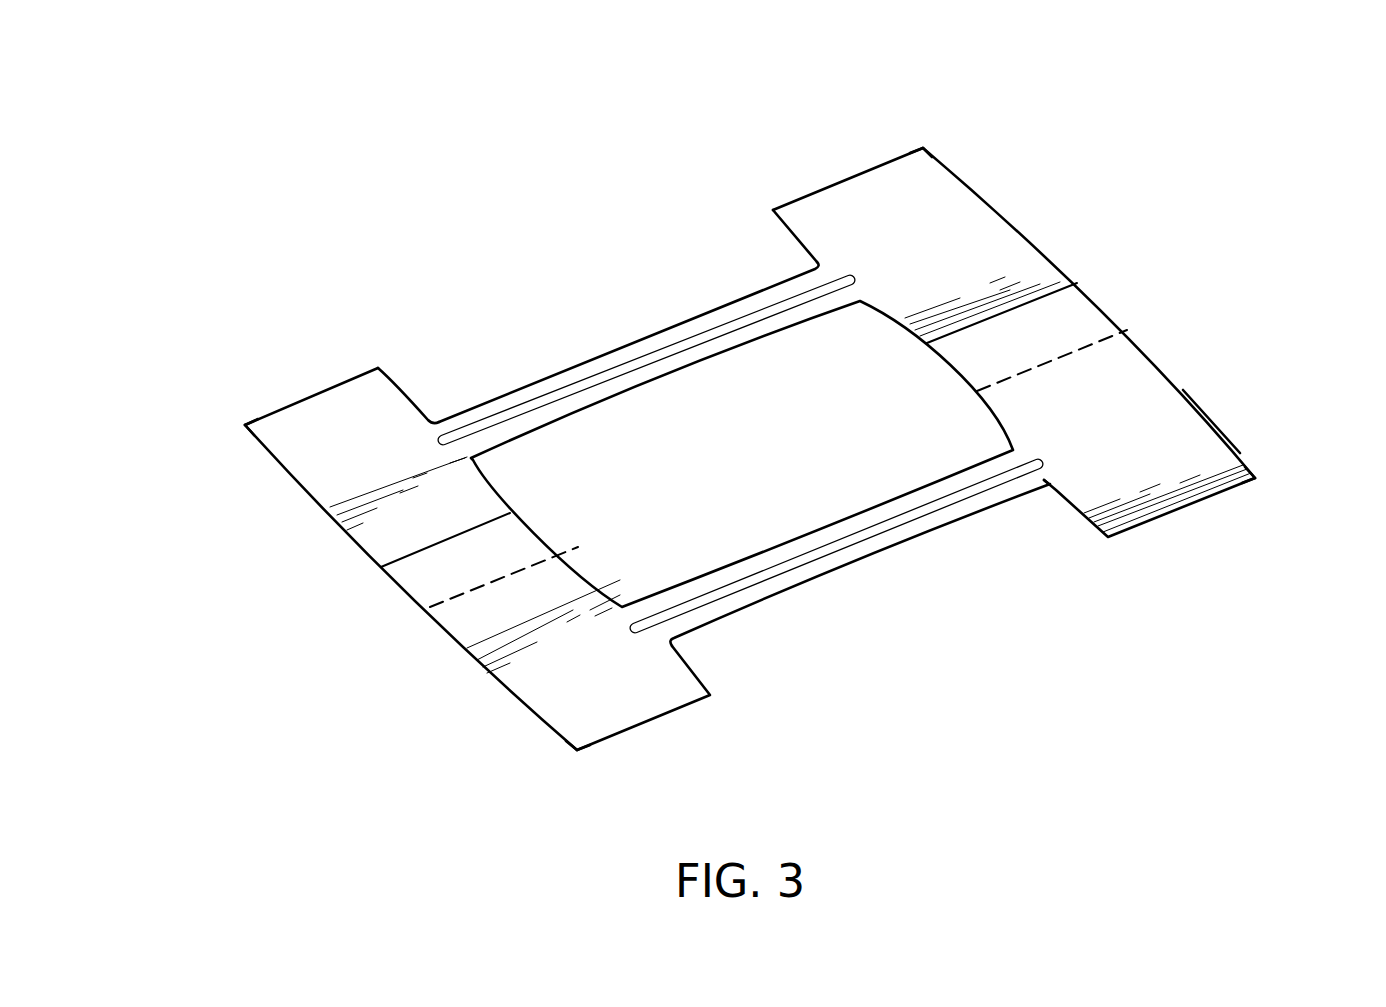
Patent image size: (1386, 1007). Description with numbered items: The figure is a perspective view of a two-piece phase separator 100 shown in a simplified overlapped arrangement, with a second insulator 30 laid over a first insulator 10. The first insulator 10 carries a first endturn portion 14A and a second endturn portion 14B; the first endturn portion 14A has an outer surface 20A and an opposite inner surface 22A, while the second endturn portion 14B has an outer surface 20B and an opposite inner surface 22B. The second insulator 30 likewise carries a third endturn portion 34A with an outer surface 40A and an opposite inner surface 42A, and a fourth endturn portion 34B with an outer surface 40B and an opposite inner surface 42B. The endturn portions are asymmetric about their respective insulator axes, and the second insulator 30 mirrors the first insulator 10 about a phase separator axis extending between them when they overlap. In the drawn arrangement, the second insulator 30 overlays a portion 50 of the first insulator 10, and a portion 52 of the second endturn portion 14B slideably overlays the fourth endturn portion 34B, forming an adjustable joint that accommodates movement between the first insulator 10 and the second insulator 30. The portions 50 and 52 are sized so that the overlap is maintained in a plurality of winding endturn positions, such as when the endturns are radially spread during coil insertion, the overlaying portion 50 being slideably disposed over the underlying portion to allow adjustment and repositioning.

The first insulator 10 is at (982, 116).
The two-piece phase separator 100 is at (340, 692).
The second insulator 30 is at (1272, 393).
The first endturn portion 14A is at (370, 452).
The second endturn portion 14B is at (963, 269).
The outer surface 20A is at (388, 402).
The outer surface 20B is at (843, 205).
The inner surface 22A is at (287, 420).
The inner surface 22B is at (930, 183).
The third endturn portion 34A is at (610, 692).
The fourth endturn portion 34B is at (1163, 469).
The outer surface 40A is at (577, 603).
The outer surface 40B is at (1165, 412).
The inner surface 42A is at (553, 733).
The inner surface 42B is at (1208, 462).
The portion of first insulator 50 is at (518, 540).
The portion of second endturn portion 52 is at (1080, 313).